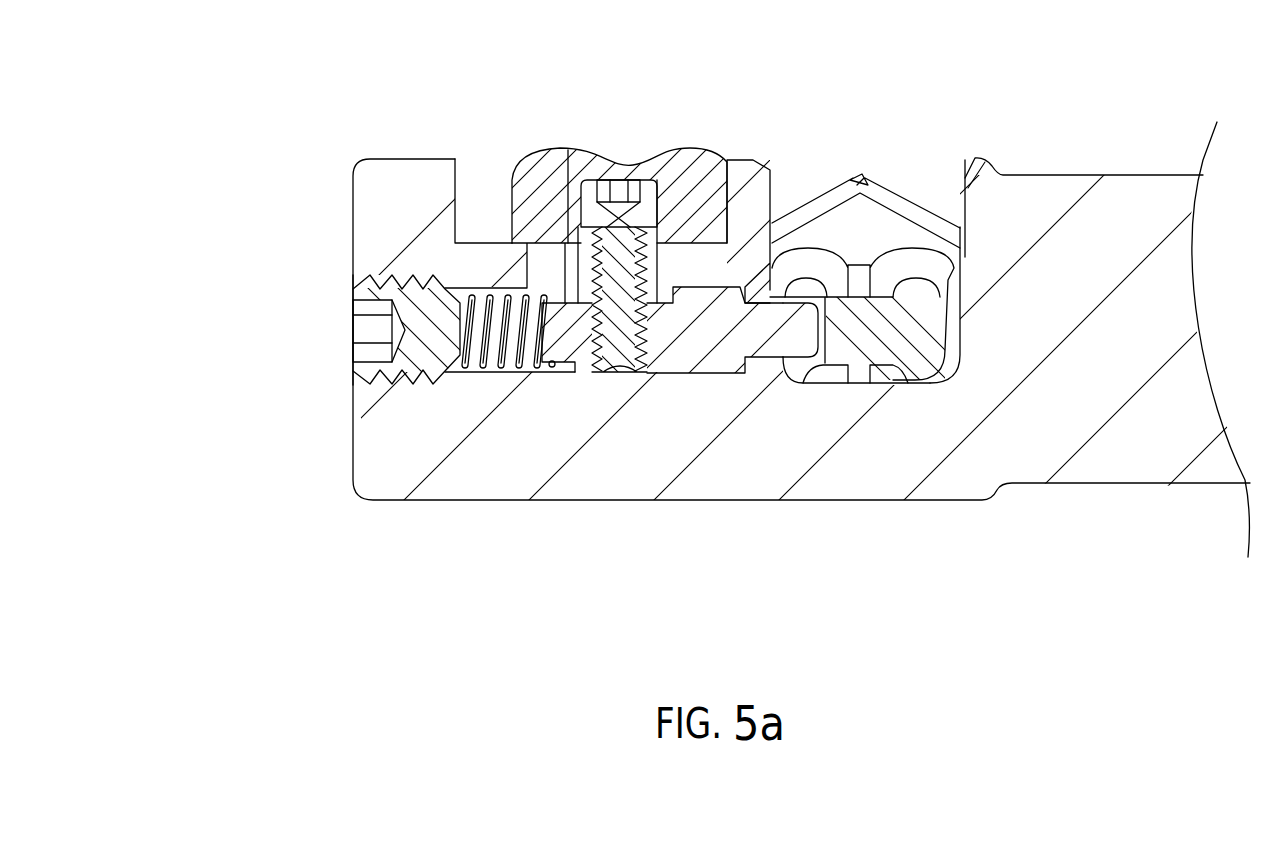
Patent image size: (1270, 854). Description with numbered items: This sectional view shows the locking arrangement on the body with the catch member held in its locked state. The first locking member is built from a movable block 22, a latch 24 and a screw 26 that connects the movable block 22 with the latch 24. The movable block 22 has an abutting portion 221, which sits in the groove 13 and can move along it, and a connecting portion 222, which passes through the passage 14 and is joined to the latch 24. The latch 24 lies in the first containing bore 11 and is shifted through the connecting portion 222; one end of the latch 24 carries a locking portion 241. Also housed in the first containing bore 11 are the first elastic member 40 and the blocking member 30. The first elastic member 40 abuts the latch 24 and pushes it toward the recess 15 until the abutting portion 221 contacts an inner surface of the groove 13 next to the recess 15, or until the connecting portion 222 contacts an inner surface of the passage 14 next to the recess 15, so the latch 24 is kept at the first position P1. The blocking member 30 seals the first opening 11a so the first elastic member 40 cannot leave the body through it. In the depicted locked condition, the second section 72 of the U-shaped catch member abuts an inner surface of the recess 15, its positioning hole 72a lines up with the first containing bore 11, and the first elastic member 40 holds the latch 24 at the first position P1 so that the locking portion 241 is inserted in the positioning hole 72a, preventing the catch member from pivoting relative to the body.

The first containing bore 11 is at (748, 385).
The first opening 11a is at (360, 318).
The groove 13 is at (466, 178).
The passage 14 is at (752, 160).
The recess 15 is at (965, 210).
The movable block 22 is at (208, 182).
The abutting portion 221 is at (512, 211).
The connecting portion 222 is at (580, 268).
The latch 24 is at (578, 373).
The screw 26 is at (653, 178).
The blocking member 30 is at (392, 383).
The first elastic member 40 is at (525, 380).
The second section 72 is at (908, 282).
The positioning hole 72a is at (955, 338).
The locking portion 241 is at (805, 357).
The first position P1 is at (702, 373).